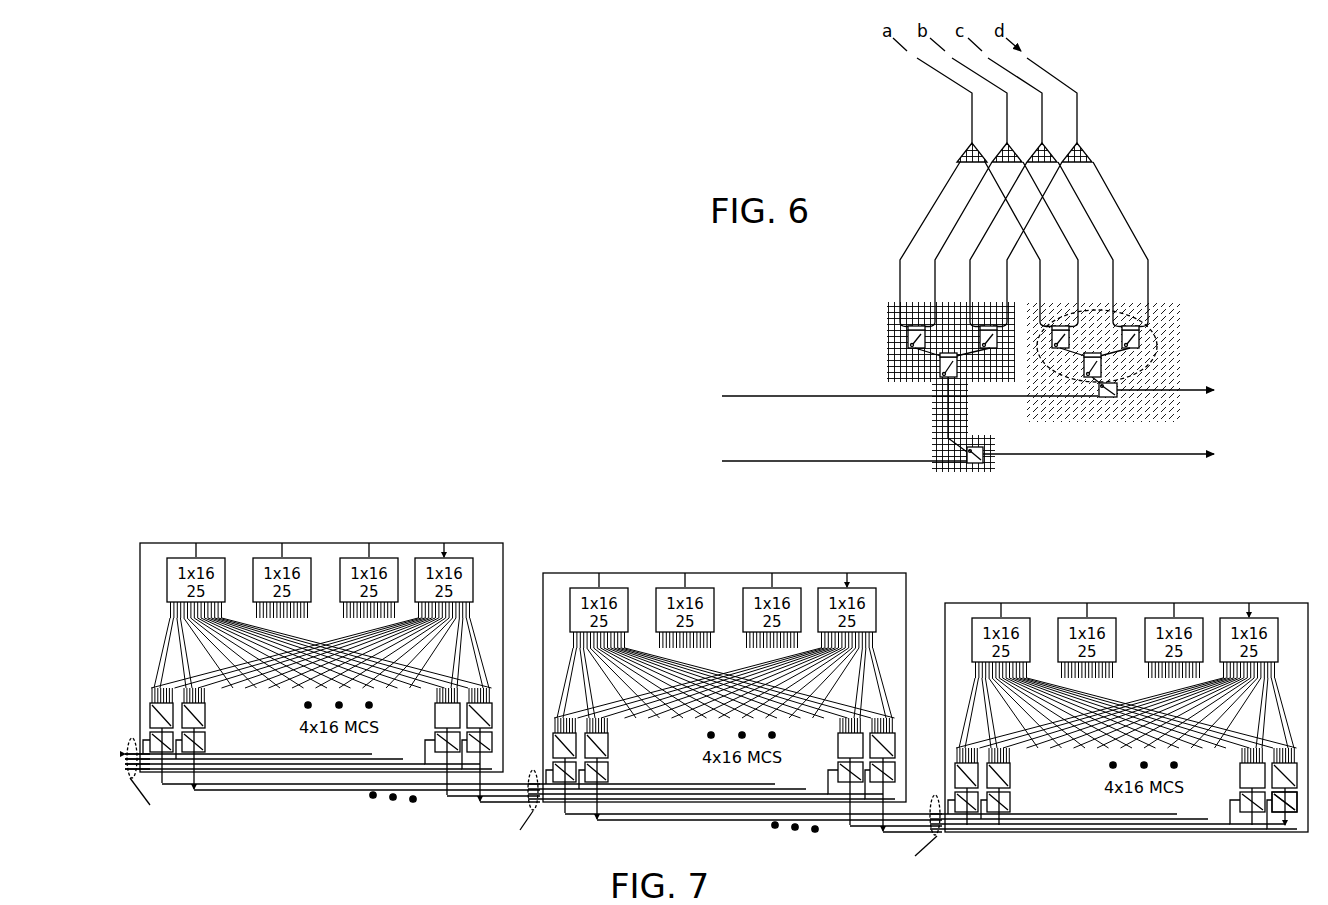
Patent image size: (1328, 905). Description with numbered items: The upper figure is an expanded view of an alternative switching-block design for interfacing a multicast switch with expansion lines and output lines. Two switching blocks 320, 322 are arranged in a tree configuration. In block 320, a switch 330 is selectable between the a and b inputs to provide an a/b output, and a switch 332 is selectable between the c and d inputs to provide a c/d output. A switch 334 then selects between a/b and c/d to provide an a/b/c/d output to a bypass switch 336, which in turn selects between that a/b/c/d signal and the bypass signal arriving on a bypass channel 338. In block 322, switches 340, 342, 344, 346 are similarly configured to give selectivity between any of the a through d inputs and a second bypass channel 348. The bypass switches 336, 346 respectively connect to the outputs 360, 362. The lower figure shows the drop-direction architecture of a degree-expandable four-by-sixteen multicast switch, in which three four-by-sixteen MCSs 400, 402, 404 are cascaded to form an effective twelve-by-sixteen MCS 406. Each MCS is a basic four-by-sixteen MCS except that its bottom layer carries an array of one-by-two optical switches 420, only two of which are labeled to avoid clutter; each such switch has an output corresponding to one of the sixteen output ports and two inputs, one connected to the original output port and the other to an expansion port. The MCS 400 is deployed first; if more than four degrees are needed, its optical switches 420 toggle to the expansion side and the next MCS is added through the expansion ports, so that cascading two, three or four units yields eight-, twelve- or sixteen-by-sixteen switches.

In FIG. 6, the switching block 320 is at (1172, 351).
In FIG. 6, the switching block 322 is at (890, 357).
In FIG. 6, the switch 330 is at (1052, 340).
In FIG. 6, the switch 332 is at (1140, 337).
In FIG. 6, the switch 334 is at (1084, 376).
In FIG. 6, the bypass switch 336 is at (1113, 397).
In FIG. 6, the bypass channel 338 is at (748, 396).
In FIG. 6, the switch 340 is at (912, 328).
In FIG. 6, the switch 342 is at (982, 340).
In FIG. 6, the switch 344 is at (940, 373).
In FIG. 6, the bypass switch 346 is at (975, 464).
In FIG. 6, the bypass channel 348 is at (736, 462).
In FIG. 6, the output 360 is at (1196, 390).
In FIG. 6, the output 362 is at (1146, 455).
In FIG. 7, the 4×16 MCS 400 is at (1018, 835).
In FIG. 7, the 4×16 MCS 402 is at (905, 600).
In FIG. 7, the 4×16 MCS 404 is at (503, 578).
In FIG. 7, the 12×16 MCS 406 is at (293, 508).
In FIG. 7, the 1×2 optical switches 420 is at (150, 740).